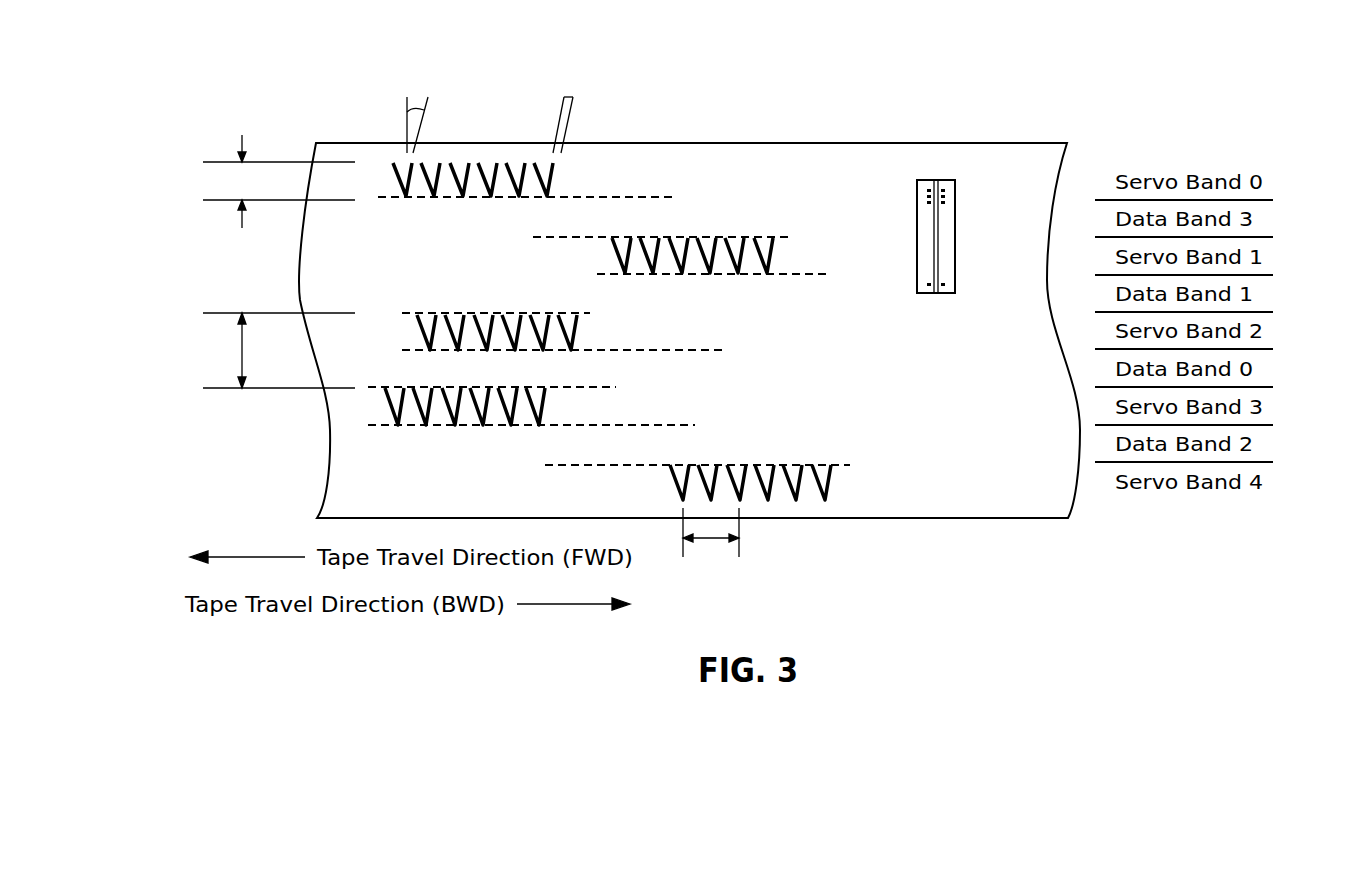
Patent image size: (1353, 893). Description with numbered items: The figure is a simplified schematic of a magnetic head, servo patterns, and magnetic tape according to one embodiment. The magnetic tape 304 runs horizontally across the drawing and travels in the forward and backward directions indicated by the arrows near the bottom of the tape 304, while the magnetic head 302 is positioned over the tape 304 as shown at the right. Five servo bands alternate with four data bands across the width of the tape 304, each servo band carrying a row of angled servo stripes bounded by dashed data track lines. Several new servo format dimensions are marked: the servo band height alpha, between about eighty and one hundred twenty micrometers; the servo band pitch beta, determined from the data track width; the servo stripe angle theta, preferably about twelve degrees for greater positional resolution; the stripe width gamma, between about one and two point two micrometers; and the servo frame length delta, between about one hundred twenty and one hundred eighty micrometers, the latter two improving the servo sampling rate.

The magnetic head 302 is at (921, 180).
The magnetic tape 304 is at (693, 143).